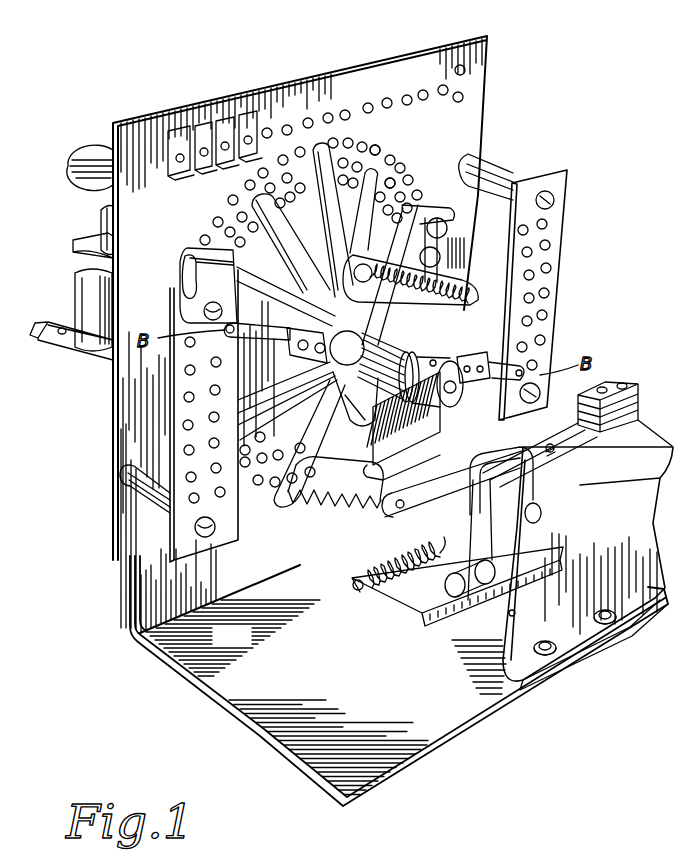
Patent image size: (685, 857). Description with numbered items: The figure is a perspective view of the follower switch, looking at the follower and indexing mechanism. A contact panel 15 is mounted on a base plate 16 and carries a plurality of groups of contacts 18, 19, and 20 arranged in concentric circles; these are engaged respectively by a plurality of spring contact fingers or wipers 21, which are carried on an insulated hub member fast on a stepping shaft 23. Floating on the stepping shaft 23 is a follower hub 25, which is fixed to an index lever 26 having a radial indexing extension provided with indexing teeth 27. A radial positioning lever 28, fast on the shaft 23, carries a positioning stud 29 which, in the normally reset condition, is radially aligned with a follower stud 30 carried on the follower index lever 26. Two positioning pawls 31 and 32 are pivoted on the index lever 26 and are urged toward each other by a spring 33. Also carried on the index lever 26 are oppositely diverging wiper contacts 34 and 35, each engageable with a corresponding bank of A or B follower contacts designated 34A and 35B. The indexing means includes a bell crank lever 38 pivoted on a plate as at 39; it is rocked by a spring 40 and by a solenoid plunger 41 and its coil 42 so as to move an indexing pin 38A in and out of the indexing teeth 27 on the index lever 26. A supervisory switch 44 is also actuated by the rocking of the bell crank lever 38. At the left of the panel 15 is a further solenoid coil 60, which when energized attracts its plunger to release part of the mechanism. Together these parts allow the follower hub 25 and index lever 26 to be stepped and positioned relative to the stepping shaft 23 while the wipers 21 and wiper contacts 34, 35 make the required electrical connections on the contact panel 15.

The contact panel 15 is at (358, 67).
The base plate 16 is at (399, 681).
The contacts 18 is at (380, 148).
The contacts 19 is at (392, 178).
The contacts 20 is at (236, 238).
The spring contact fingers or wipers 21 is at (280, 240).
The stepping shaft 23 is at (425, 426).
The follower hub 25 is at (410, 370).
The index lever 26 is at (376, 409).
The indexing teeth 27 is at (319, 514).
The radial positioning lever 28 is at (438, 214).
The positioning stud 29 is at (447, 226).
The follower stud 30 is at (441, 256).
The positioning pawl 31 is at (378, 319).
The positioning pawl 32 is at (445, 325).
The spring 33 is at (390, 275).
The wiper contact 34 is at (490, 352).
The A follower contacts 34A is at (528, 343).
The wiper contact 35 is at (258, 322).
The B follower contacts 35B is at (198, 415).
The bell crank lever 38 is at (453, 483).
The indexing pin 38A is at (425, 458).
The pivot 39 is at (105, 228).
The spring 40 is at (352, 579).
The solenoid plunger 41 is at (559, 568).
The coil 42 is at (480, 528).
The supervisory switch 44 is at (574, 436).
The coil 60 is at (77, 288).